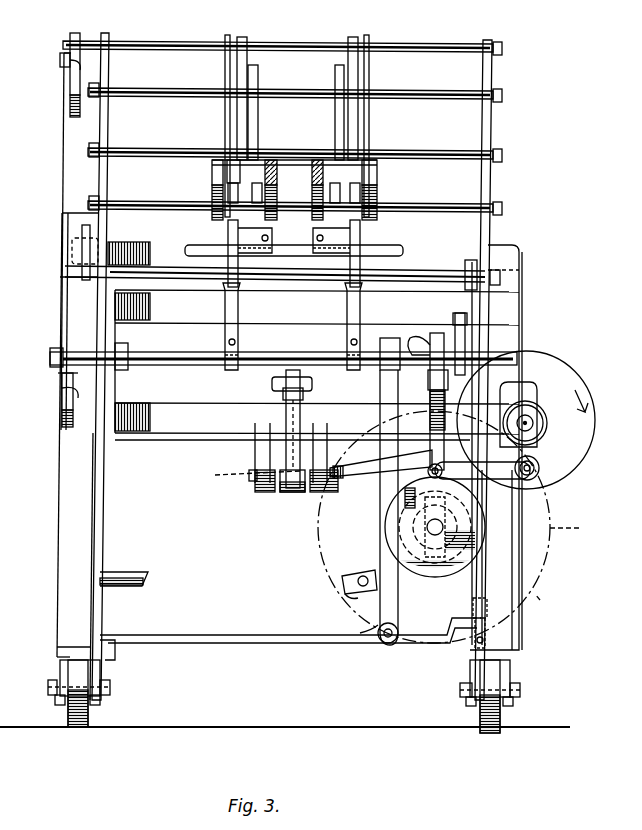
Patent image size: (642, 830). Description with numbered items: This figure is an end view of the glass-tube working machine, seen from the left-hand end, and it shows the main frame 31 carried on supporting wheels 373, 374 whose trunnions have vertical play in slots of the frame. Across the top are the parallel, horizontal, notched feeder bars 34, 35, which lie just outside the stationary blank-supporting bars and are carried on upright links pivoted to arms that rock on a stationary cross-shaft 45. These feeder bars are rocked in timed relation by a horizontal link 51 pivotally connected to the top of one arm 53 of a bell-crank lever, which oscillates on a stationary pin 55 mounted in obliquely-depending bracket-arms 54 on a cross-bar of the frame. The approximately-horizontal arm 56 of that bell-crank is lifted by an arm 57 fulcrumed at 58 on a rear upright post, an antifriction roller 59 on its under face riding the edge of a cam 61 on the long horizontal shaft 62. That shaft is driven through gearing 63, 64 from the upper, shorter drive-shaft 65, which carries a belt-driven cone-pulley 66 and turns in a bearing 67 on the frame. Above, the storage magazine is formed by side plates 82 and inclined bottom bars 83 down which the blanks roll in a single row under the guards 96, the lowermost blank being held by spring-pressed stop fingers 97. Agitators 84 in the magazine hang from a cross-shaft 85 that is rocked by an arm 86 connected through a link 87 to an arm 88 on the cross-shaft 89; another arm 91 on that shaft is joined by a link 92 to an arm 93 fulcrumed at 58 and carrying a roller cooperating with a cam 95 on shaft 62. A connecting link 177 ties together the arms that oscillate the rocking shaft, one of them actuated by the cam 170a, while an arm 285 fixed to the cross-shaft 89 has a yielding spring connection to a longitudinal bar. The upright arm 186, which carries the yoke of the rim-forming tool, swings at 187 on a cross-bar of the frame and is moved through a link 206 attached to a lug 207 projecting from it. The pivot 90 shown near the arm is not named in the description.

The main frame 31 is at (60, 549).
The notched feeder bar 34 is at (213, 208).
The notched feeder bar 35 is at (378, 176).
The stationary cross-shaft 45 is at (137, 574).
The horizontal link 51 is at (275, 383).
The bell-crank lever arm 53 is at (289, 418).
The obliquely-depending bracket-arms 54 is at (258, 463).
The stationary pin or shaft 55 is at (251, 480).
The approximately-horizontal bell-crank arm 56 is at (244, 475).
The arm 57 is at (350, 456).
The fulcrum 58 is at (535, 471).
The antifriction roller 59 is at (385, 513).
The cam 61 is at (350, 559).
The long horizontal shaft 62 is at (435, 527).
The gearing 63 is at (535, 594).
The gearing 64 is at (533, 405).
The drive-shaft 65 is at (533, 424).
The cone-pulley 66 is at (556, 368).
The bearing 67 is at (537, 392).
The side plate 82 is at (228, 40).
The inclined bottom bar 83 is at (318, 160).
The agitator 84 is at (243, 52).
The cross-shaft 85 is at (426, 48).
The arm 86 is at (82, 72).
The link 87 is at (64, 186).
The arm 88 is at (72, 382).
The cross-shaft 89 is at (184, 360).
The pivot 90 is at (428, 478).
The arm 91 is at (420, 334).
The link 92 is at (430, 385).
The arm 93 is at (484, 503).
The cam 95 is at (342, 580).
The guard 96 is at (335, 108).
The stop finger 97 is at (232, 235).
The cam 170a is at (587, 528).
The connecting link 177 is at (452, 318).
The upright arm 186 is at (392, 348).
The pivot mounting 187 is at (389, 646).
The link 206 is at (345, 588).
The lug 207 is at (380, 636).
The arm 285 is at (240, 329).
The supporting wheel 373 is at (95, 708).
The supporting wheel 374 is at (506, 720).